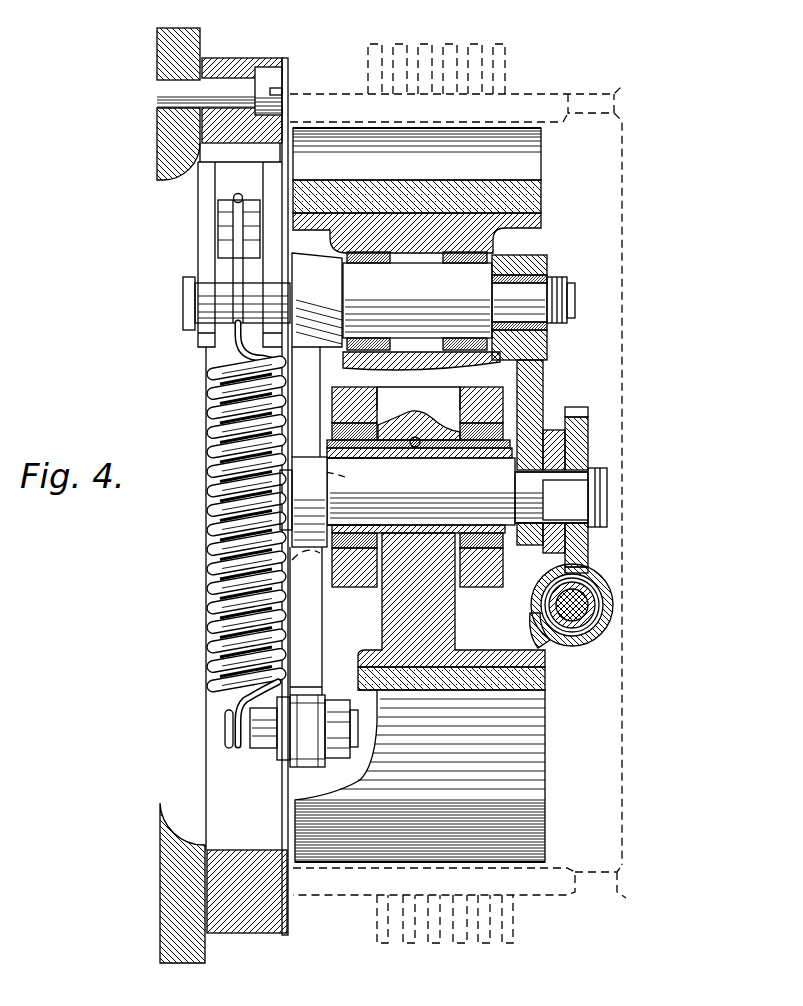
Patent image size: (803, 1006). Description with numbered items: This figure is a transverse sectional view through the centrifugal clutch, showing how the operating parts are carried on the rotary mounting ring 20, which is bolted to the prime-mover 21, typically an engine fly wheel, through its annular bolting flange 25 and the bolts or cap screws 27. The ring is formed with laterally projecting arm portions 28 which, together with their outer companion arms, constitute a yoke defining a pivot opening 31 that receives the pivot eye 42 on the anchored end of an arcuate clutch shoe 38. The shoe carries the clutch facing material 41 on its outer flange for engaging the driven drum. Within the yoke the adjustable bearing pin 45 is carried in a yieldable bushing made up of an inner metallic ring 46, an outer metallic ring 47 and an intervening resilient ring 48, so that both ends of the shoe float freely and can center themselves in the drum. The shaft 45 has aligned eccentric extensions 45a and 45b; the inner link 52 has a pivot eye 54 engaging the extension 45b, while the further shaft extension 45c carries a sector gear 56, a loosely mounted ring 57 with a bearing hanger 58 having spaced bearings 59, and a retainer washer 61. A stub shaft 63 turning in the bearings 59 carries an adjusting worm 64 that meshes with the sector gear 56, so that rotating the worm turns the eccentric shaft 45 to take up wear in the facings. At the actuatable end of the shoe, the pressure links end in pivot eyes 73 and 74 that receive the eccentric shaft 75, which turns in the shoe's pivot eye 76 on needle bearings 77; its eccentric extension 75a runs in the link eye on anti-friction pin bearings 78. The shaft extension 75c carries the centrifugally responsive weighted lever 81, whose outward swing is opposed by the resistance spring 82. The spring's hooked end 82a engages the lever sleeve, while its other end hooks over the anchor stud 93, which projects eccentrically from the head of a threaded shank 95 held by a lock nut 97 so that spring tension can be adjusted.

The rotary mounting ring 20 is at (286, 57).
The prime-mover 21 is at (157, 47).
The annular bolting flange 25 is at (240, 49).
The bolts or cap screws 27 is at (268, 72).
The arm portions 28 is at (355, 587).
The pivot opening 31 is at (400, 407).
The arcuate clutch shoes 38 is at (517, 228).
The clutch facing material 41 is at (538, 195).
The pivot eye 42 is at (422, 419).
The adjustable bearing pin 45 is at (428, 489).
The reduced extension 45a is at (525, 488).
The extension 45b is at (340, 491).
The shaft extension 45c is at (580, 521).
The inner metallic ring 46 is at (330, 446).
The outer metallic ring 47 is at (333, 420).
The resilient ring 48 is at (333, 434).
The inner link 52 is at (317, 380).
The pivot eye 54 is at (318, 504).
The sector gear 56 is at (588, 416).
The ring 57 is at (588, 463).
The bearing hanger 58 is at (567, 439).
The spaced bearings 59 is at (572, 637).
The retainer washer 61 is at (602, 503).
The stub shaft 63 is at (597, 615).
The adjusting worm 64 is at (597, 588).
The pivot eye 73 is at (528, 349).
The pivot eye 74 is at (317, 300).
The eccentric shaft 75 is at (430, 295).
The eccentric extension 75a is at (527, 291).
The shaft extension 75c is at (228, 293).
The pivot eye 76 is at (418, 368).
The anti-friction pin or needle bearings 77 is at (373, 263).
The anti-friction pin bearings 78 is at (548, 269).
The weighted levers 81 is at (198, 240).
The resistance spring 82 is at (210, 439).
The hooked end 82a is at (218, 203).
The anchor stud 93 is at (258, 747).
The threaded shank 95 is at (357, 725).
The lock nut 97 is at (332, 760).